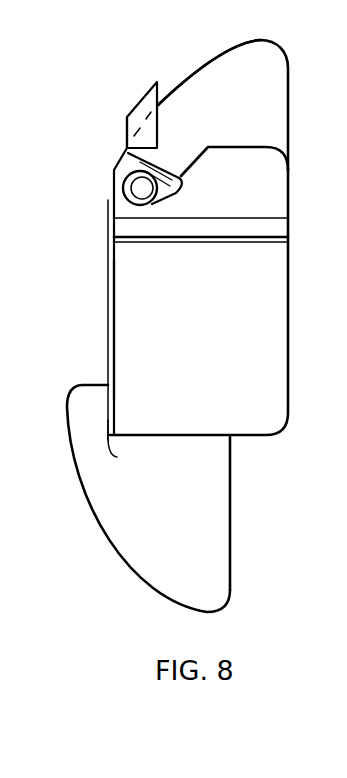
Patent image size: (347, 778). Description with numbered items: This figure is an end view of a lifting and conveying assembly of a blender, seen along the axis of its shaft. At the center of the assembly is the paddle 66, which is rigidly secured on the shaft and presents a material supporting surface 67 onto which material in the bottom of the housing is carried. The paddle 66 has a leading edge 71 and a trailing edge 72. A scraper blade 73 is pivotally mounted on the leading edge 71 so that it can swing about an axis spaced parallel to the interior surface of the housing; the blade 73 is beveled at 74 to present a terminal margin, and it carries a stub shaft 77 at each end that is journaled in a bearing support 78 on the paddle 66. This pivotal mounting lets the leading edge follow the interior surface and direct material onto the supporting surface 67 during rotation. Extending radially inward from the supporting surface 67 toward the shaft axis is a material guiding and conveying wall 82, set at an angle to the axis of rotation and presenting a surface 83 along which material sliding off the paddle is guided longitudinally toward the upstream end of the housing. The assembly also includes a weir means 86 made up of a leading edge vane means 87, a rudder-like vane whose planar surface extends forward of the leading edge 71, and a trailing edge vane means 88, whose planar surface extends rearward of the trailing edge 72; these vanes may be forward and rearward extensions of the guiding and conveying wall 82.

The paddle 66 is at (113, 275).
The material supporting surface 67 is at (118, 327).
The leading edge 71 is at (108, 200).
The trailing edge 72 is at (129, 449).
The scraper blade 73 is at (130, 120).
The bevel 74 is at (142, 103).
The stub shaft 77 is at (157, 203).
The bearing support 78 is at (181, 176).
The material guiding and conveying wall 82 is at (289, 289).
The surface 83 is at (258, 333).
The weir means 86 is at (289, 73).
The leading edge vane means 87 is at (257, 103).
The trailing edge vane means 88 is at (208, 566).